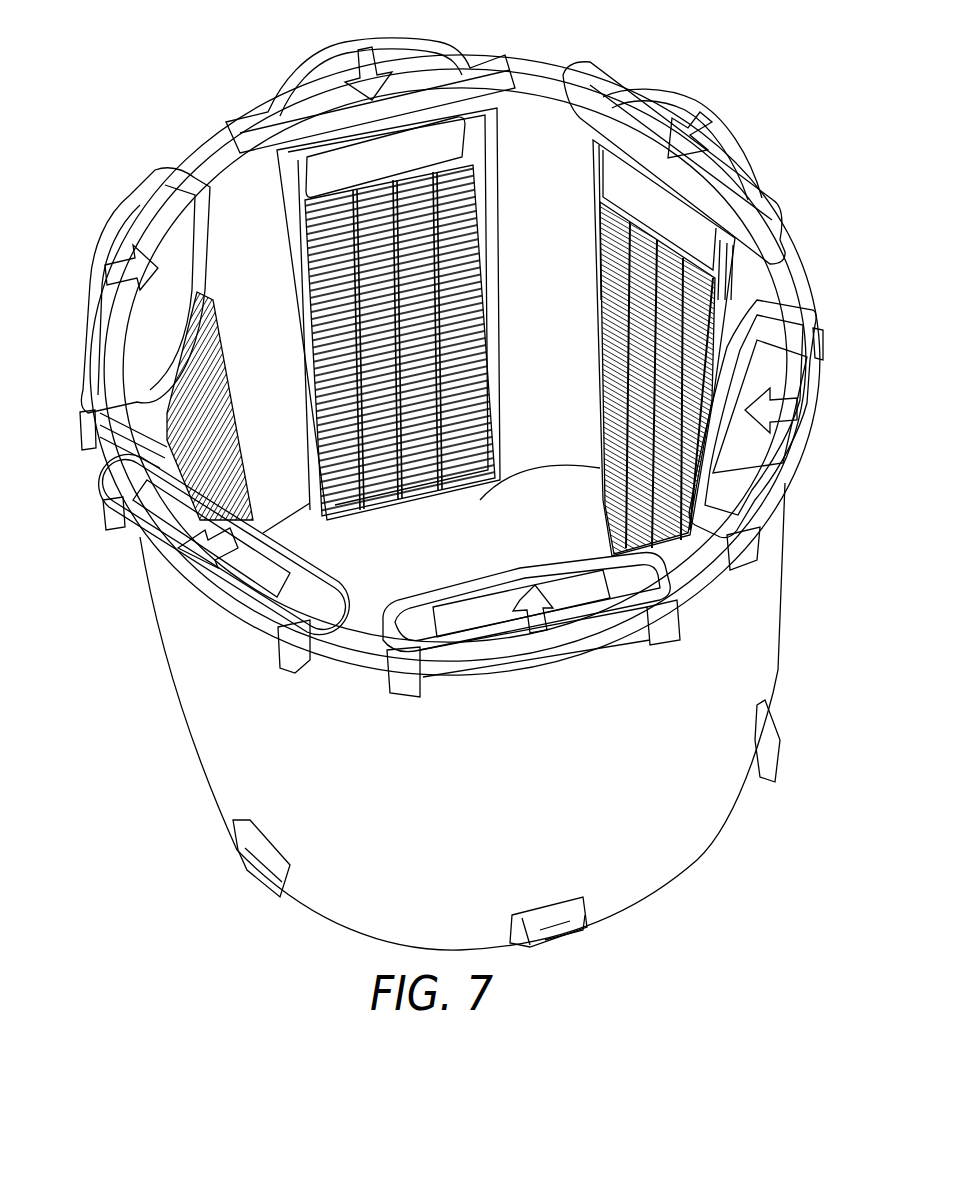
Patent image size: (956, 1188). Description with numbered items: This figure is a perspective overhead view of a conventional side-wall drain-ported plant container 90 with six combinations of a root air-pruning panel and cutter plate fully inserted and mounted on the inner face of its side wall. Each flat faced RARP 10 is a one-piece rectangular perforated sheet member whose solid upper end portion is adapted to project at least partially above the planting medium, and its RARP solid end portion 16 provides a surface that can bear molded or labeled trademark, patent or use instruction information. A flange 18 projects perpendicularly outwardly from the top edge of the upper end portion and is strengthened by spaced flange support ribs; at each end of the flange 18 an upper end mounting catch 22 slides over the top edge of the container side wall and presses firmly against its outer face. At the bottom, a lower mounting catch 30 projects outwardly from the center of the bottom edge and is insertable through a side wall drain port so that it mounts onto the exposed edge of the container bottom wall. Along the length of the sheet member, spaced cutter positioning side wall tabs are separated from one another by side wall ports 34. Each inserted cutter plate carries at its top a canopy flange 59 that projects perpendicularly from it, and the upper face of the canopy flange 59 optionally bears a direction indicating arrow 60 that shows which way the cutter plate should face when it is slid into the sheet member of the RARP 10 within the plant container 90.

The RARP 10 is at (593, 168).
The RARP solid end portion 16 is at (388, 314).
The flange 18 is at (596, 80).
The upper end mounting catch 22 is at (307, 657).
The lower mounting catch 30 is at (552, 937).
The side wall ports 34 is at (246, 843).
The canopy flange 59 is at (665, 108).
The direction indicating arrow 60 is at (372, 62).
The plant container 90 is at (500, 790).